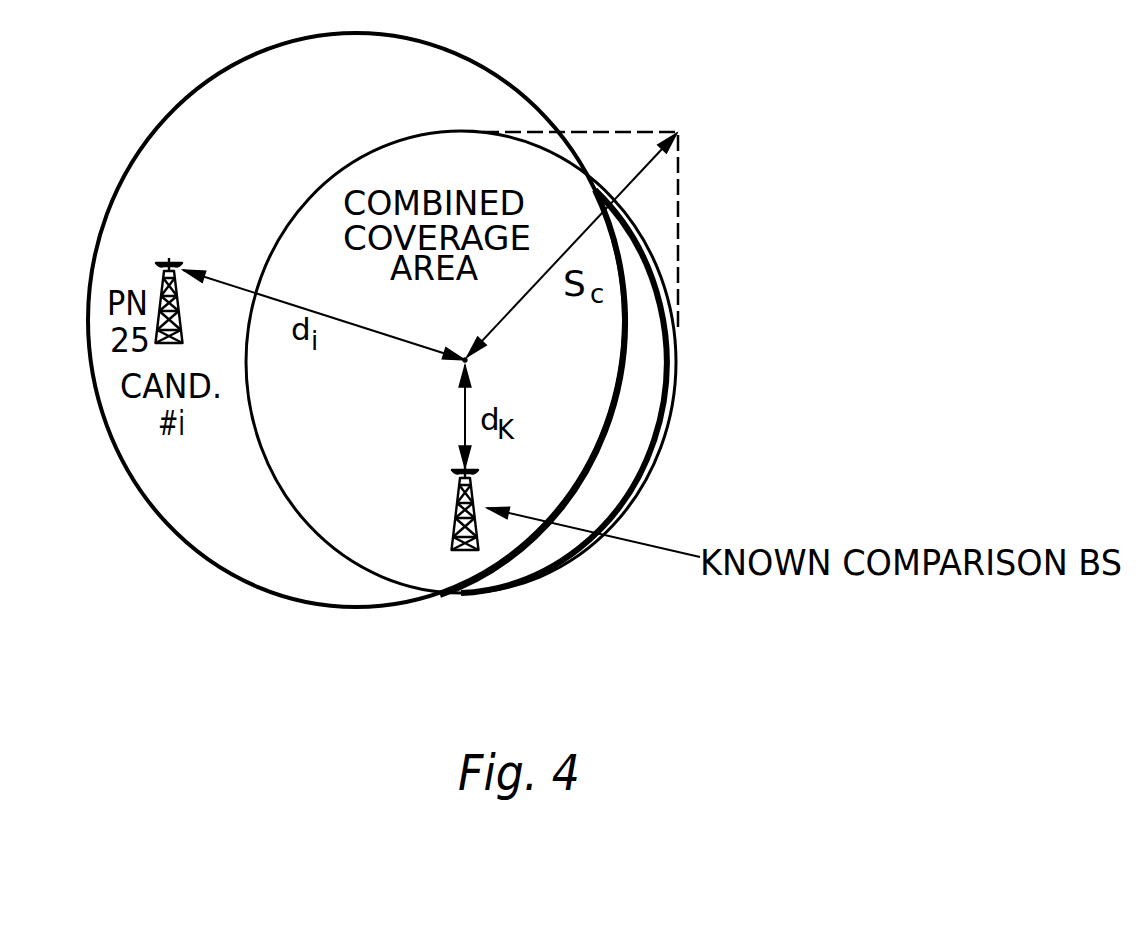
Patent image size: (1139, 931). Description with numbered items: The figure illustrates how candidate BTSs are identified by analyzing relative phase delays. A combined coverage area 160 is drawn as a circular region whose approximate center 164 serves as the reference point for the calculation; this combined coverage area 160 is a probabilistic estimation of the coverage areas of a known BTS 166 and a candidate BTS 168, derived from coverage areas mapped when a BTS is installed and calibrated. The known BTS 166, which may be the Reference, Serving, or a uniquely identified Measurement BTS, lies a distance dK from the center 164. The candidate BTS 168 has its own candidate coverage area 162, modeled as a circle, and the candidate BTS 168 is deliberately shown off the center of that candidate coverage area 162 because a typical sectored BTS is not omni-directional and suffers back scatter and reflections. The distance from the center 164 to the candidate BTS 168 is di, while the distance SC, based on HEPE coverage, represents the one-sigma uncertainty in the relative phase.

The combined coverage area 160 is at (668, 458).
The candidate coverage area 162 is at (486, 40).
The center of the combined coverage area 164 is at (470, 362).
The known BTS 166 is at (452, 510).
The candidate BTS 168 is at (166, 262).